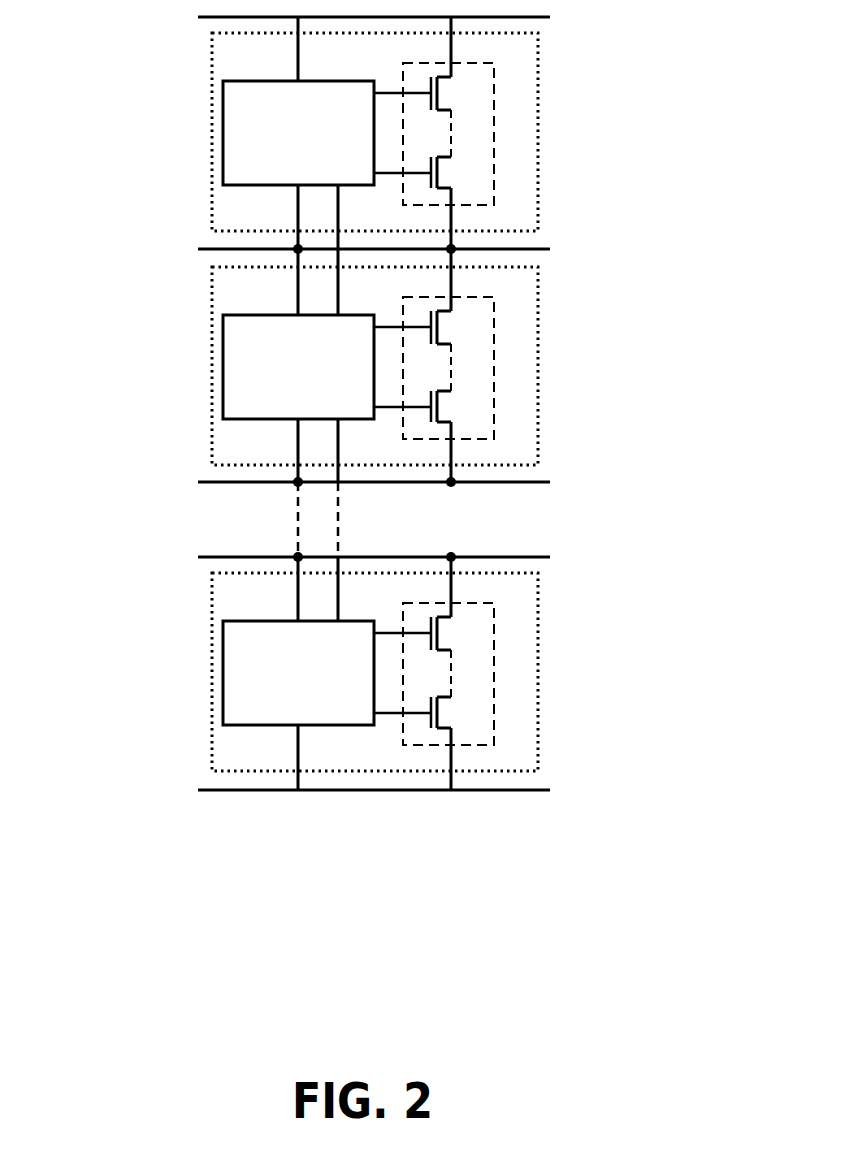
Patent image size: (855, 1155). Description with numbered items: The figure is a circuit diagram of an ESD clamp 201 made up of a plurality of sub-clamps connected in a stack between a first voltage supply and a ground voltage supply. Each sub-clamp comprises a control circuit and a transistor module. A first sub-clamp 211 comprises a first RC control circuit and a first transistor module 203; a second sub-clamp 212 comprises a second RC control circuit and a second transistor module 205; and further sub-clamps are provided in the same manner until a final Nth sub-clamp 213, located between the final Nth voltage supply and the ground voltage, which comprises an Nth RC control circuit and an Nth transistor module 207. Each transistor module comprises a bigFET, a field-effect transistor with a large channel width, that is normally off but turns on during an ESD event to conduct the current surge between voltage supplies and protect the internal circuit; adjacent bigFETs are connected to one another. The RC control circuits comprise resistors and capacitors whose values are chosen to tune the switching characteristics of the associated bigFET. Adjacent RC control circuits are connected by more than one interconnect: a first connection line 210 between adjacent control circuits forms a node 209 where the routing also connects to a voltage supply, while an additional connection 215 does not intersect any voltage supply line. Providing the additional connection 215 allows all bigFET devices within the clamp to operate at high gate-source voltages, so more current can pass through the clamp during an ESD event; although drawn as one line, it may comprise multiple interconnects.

The ESD clamp 201 is at (745, 927).
The first transistor module 203 is at (494, 132).
The second transistor module 205 is at (494, 365).
The Nth transistor module 207 is at (494, 673).
The node 209 is at (298, 249).
The first connection line 210 is at (298, 203).
The first sub-clamp 211 is at (212, 132).
The second sub-clamp 212 is at (212, 365).
The Nth sub-clamp 213 is at (212, 672).
The additional connection 215 is at (338, 302).